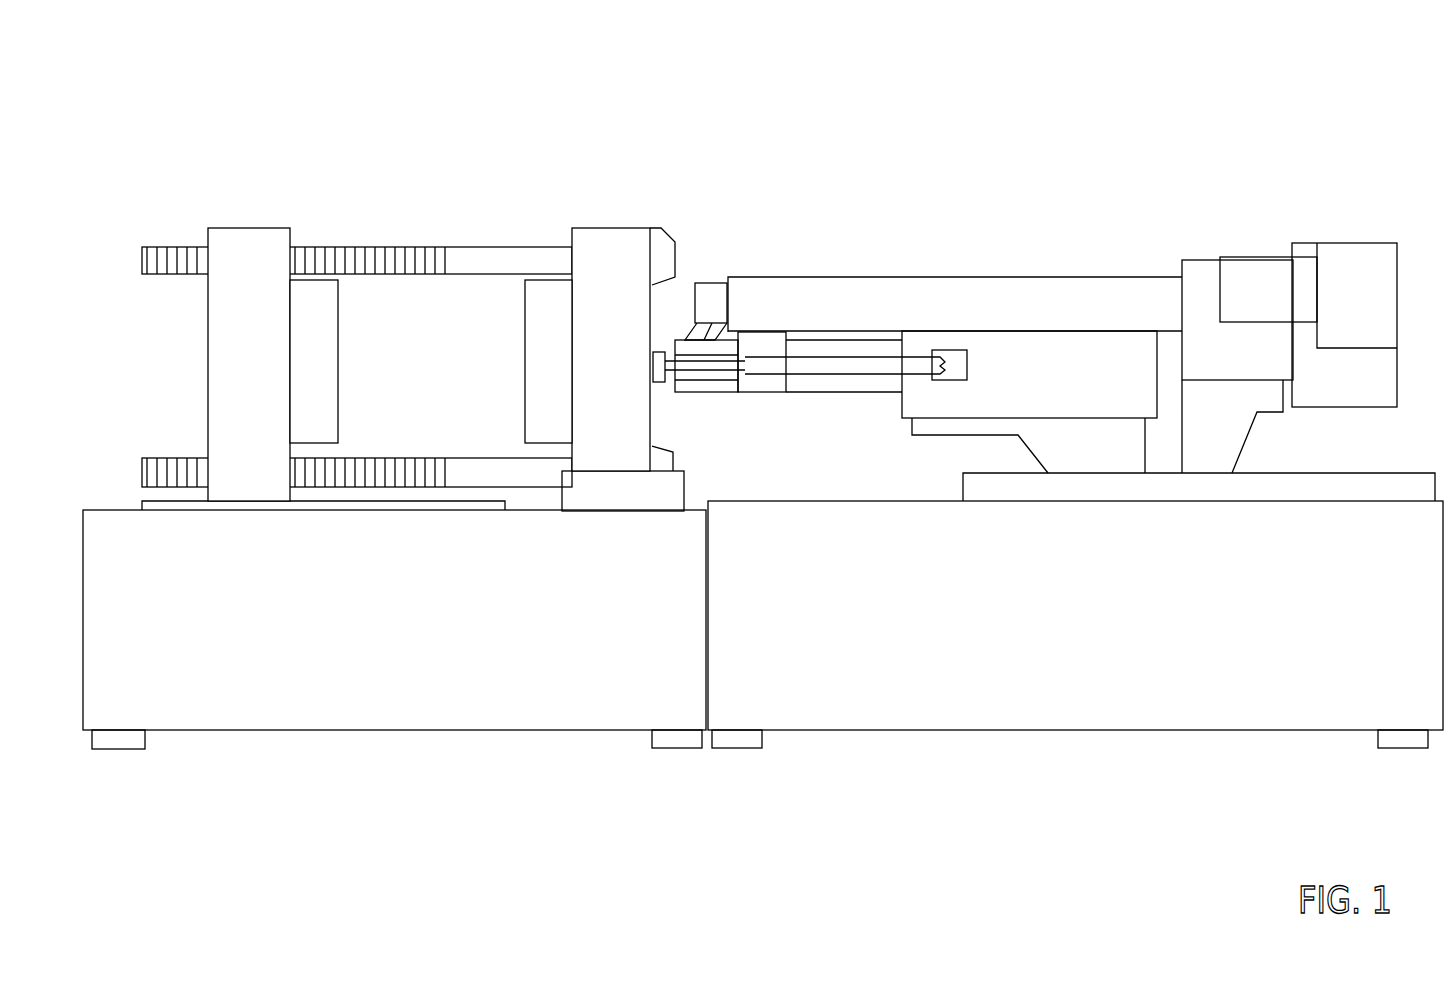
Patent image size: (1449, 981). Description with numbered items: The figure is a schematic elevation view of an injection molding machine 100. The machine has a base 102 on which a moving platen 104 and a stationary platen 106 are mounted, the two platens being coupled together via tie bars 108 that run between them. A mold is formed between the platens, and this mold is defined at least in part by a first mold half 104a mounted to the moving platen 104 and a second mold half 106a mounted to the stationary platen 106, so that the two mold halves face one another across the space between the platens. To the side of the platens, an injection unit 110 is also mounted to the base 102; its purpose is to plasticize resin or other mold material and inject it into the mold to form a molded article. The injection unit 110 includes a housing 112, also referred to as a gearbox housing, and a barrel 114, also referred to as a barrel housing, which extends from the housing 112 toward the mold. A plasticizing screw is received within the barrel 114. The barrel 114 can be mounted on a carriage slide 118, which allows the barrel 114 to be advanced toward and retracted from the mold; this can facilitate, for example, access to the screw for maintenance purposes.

The injection molding machine 100 is at (589, 92).
The base 102 is at (818, 710).
The moving platen 104 is at (268, 314).
The first mold half 104a is at (318, 298).
The stationary platen 106 is at (630, 314).
The second mold half 106a is at (543, 298).
The tie bars 108 is at (473, 257).
The injection unit 110 is at (1234, 160).
The housing 112 is at (1370, 218).
The barrel 114 is at (1106, 228).
The carriage slide 118 is at (1113, 488).